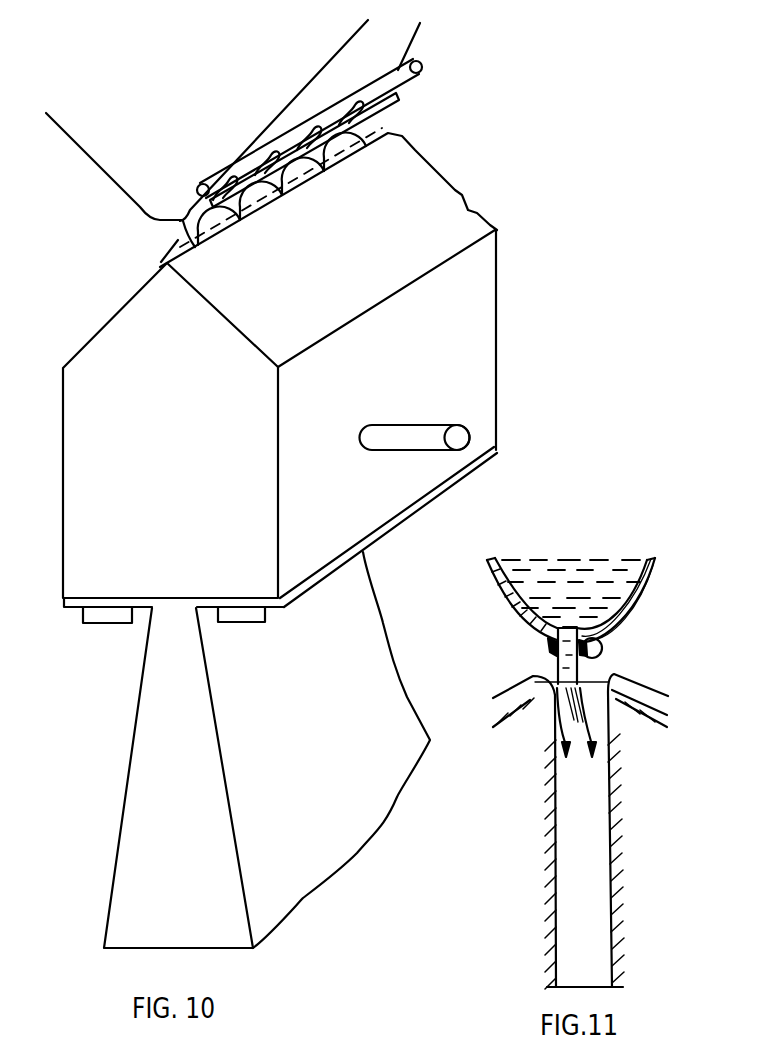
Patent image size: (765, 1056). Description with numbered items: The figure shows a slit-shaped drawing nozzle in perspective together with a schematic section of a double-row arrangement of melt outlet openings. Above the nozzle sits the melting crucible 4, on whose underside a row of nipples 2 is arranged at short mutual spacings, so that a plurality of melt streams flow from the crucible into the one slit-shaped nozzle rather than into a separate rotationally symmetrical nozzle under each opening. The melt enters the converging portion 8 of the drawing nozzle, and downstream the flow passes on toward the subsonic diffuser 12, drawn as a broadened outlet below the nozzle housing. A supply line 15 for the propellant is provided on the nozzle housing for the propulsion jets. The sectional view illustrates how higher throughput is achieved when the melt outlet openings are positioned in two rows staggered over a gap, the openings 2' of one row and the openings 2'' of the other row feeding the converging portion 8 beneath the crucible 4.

In FIG. 10, the nipple on the underside of the crucible 2 is at (321, 173).
In FIG. 11, the melt outlet opening of the first row 2' is at (534, 650).
In FIG. 11, the melt outlet opening of the second row 2'' is at (619, 646).
In FIG. 10, the melting crucible 4 is at (395, 48).
In FIG. 11, the melting crucible 4 is at (641, 582).
In FIG. 10, the converging portion of the drawing nozzle 8 is at (158, 262).
In FIG. 11, the converging portion of the drawing nozzle 8 is at (535, 677).
In FIG. 10, the subsonic diffuser 12 is at (323, 857).
In FIG. 10, the supply line for the propellant 15 is at (420, 428).